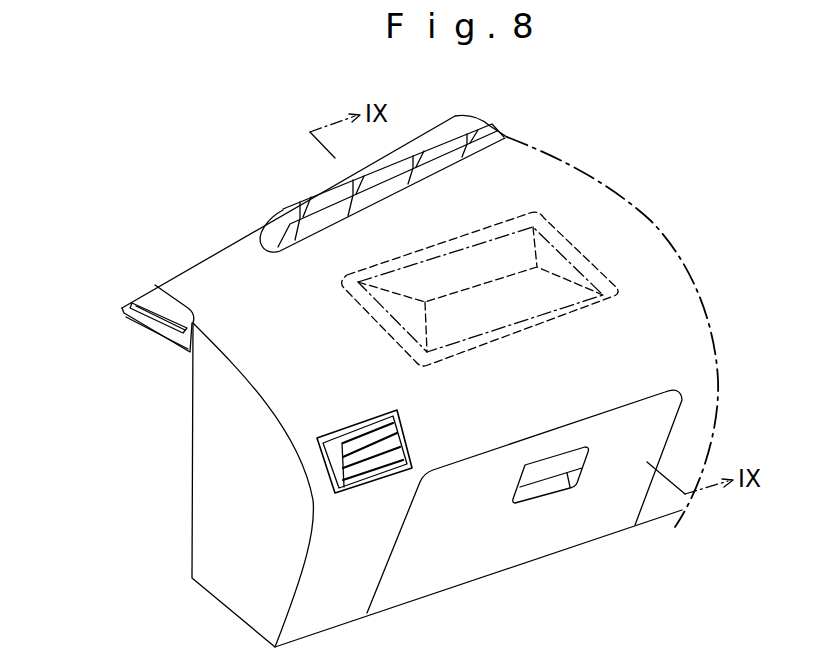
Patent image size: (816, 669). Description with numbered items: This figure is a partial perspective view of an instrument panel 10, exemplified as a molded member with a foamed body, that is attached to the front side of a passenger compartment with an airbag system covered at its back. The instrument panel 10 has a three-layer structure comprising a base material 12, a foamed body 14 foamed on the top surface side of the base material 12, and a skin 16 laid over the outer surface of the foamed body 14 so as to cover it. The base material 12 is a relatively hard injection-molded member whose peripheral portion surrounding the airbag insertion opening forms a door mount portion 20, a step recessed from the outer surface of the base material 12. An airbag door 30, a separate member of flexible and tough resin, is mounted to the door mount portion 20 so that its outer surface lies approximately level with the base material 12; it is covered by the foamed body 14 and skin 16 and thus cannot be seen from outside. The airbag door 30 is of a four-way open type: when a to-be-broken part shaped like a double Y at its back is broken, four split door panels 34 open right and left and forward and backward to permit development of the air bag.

The instrument panel 10 is at (228, 202).
The base material 12 is at (242, 463).
The foamed body 14 is at (242, 520).
The skin 16 is at (247, 332).
The door mount portion 20 is at (390, 257).
The airbag door 30 is at (470, 232).
The split door panels 34 is at (492, 258).